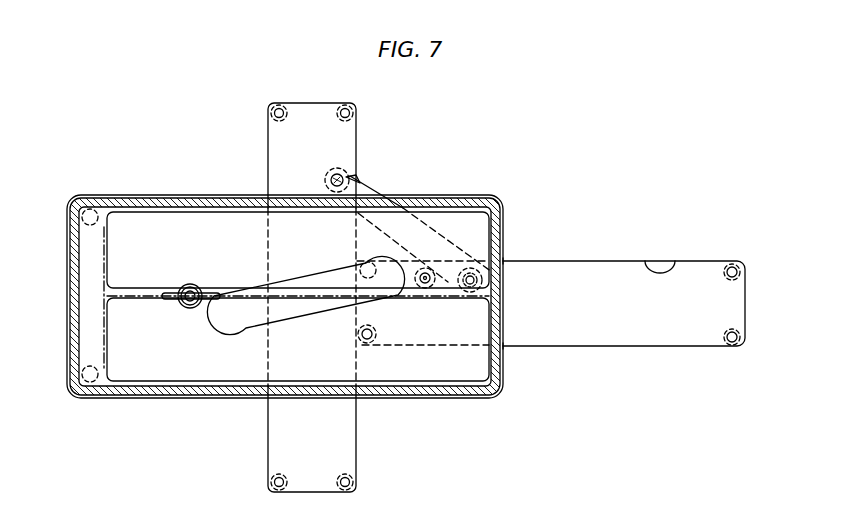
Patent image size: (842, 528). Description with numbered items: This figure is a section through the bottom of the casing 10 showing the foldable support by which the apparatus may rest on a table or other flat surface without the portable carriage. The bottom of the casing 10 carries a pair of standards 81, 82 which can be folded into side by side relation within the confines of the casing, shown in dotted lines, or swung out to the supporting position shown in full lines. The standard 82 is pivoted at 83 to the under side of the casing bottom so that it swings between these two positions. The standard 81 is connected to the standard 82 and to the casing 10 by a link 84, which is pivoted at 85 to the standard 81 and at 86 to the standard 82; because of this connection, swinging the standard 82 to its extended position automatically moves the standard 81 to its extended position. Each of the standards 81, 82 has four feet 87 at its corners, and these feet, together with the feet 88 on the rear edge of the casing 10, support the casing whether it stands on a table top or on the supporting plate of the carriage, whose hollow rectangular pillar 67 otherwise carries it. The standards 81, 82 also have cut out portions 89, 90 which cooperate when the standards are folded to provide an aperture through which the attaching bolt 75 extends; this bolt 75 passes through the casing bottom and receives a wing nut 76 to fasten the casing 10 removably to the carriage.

The casing 10 is at (364, 278).
The feet 88 is at (80, 196).
The hollow rectangular pillar 67 is at (505, 209).
The pivot 86 is at (506, 250).
The standard 81 is at (270, 153).
The standard 82 is at (107, 248).
The feet 87 is at (272, 107).
The pivot 85 is at (362, 170).
The cut out portion 89 is at (355, 185).
The link 84 is at (445, 205).
The pivot 83 is at (460, 252).
The wing nut 76 is at (210, 294).
The cut out portion 90 is at (658, 259).
The bolt 75 is at (181, 302).